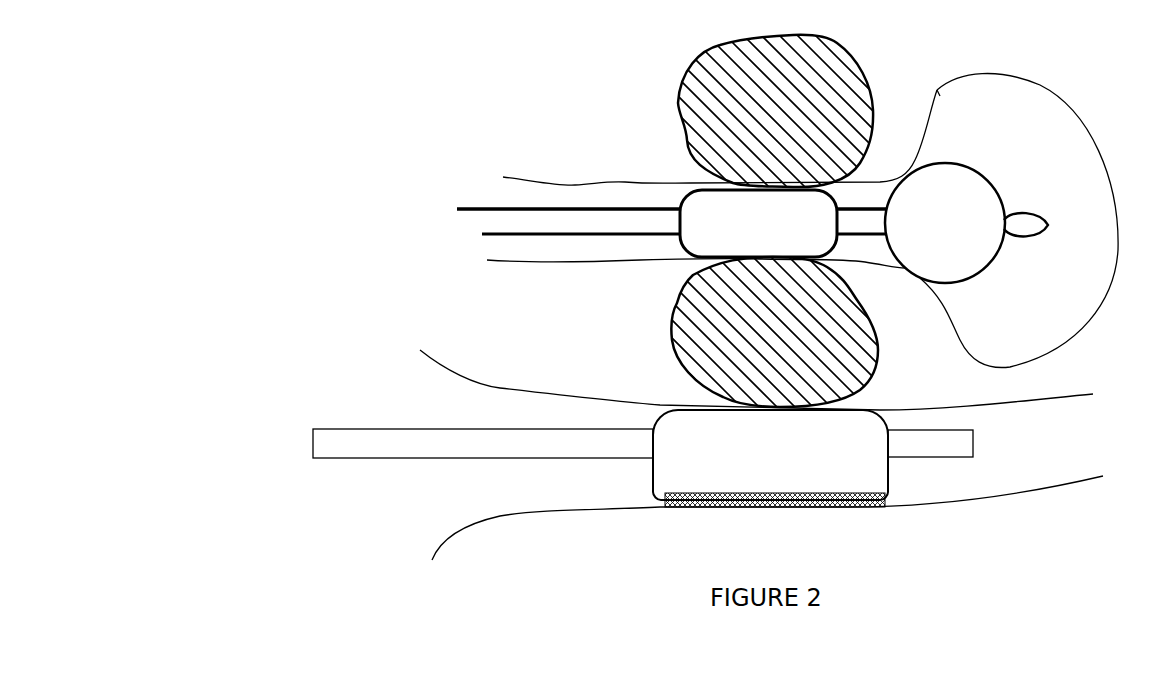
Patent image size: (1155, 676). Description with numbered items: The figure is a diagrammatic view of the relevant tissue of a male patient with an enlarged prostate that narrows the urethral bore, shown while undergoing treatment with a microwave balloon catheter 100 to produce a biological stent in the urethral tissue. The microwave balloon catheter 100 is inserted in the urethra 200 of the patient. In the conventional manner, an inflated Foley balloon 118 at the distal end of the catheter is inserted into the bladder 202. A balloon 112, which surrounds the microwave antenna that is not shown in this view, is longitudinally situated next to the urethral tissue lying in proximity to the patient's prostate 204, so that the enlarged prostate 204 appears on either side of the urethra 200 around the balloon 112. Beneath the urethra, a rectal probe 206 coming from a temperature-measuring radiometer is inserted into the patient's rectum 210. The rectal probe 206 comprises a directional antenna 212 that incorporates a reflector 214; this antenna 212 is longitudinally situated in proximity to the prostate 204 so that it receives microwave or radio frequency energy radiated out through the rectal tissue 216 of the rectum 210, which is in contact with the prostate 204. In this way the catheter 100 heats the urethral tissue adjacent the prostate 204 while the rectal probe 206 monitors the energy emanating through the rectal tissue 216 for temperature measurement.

The microwave balloon catheter 100 is at (519, 207).
The balloon 112 is at (683, 238).
The inflated Foley balloon 118 is at (950, 167).
The urethra 200 is at (527, 246).
The bladder 202 is at (1058, 106).
The prostate 204 is at (680, 99).
The rectal probe 206 is at (433, 428).
The rectum 210 is at (555, 497).
The directional antenna 212 is at (648, 473).
The reflector 214 is at (887, 500).
The rectal tissue 216 is at (1040, 398).